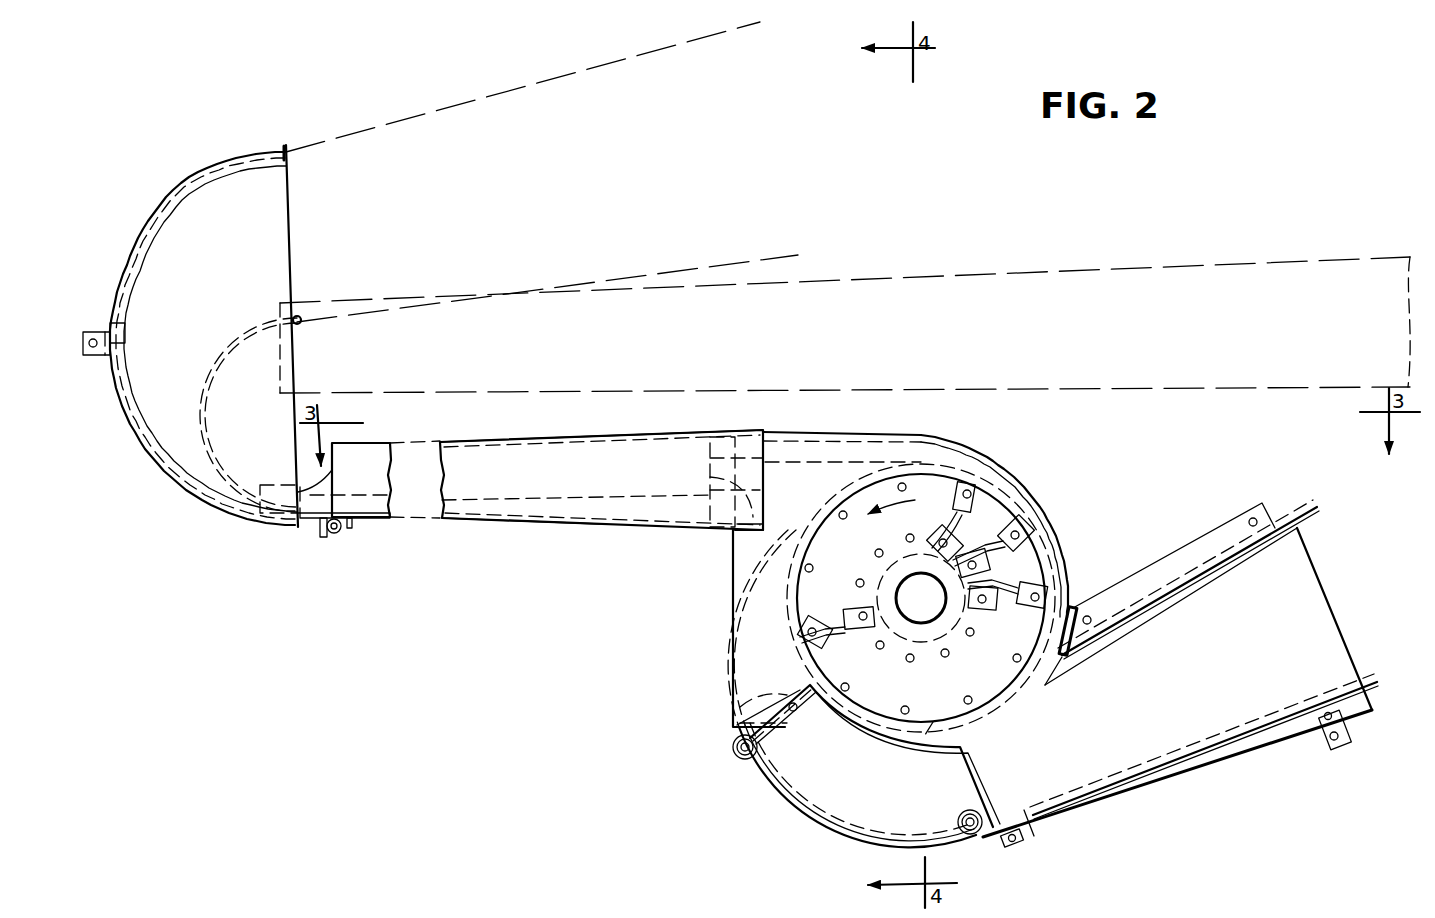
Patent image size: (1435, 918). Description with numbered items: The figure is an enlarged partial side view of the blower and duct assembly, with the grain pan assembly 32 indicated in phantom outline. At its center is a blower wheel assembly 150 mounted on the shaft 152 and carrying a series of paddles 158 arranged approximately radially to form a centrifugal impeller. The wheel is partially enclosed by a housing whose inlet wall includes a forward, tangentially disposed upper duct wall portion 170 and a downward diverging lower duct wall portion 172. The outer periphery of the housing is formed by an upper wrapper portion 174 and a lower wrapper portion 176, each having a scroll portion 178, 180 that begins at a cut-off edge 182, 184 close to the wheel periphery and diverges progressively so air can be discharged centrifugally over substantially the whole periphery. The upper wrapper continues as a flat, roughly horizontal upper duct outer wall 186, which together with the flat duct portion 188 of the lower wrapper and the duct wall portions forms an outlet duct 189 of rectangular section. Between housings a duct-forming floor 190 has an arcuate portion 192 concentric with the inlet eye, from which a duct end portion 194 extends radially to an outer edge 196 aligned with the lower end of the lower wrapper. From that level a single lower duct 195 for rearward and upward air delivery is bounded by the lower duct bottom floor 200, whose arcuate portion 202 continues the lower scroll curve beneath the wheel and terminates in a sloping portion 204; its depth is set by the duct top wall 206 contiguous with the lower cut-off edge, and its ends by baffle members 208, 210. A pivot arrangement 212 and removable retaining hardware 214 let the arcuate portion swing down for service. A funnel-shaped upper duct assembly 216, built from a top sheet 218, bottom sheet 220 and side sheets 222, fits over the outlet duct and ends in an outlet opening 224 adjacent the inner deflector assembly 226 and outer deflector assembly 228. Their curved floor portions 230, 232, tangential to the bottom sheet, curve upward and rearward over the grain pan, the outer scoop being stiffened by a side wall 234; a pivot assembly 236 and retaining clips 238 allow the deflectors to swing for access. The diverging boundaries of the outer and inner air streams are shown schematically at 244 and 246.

The grain pan assembly 32 is at (1212, 248).
The blower wheel assembly 150 is at (1027, 562).
The shaft 152 is at (895, 598).
The paddles 158 is at (953, 513).
The upper duct wall portion 170 is at (828, 481).
The lower duct wall portion 172 is at (773, 675).
The upper wrapper portion 174 is at (970, 431).
The lower wrapper portion 176 is at (722, 575).
The upper scroll portion 178 is at (1010, 477).
The lower scroll portion 180 is at (745, 598).
The upper cut-off edge 182 is at (812, 532).
The lower cut-off edge 184 is at (1062, 642).
The upper duct outer wall 186 is at (800, 432).
The flat duct portion 188 is at (722, 481).
The outlet duct 189 is at (710, 490).
The duct-forming floor 190 is at (869, 700).
The arcuate portion 192 is at (933, 722).
The duct end portion 194 is at (740, 700).
The lower duct 195 is at (1287, 770).
The outer edge 196 is at (740, 723).
The lower duct bottom floor 200 is at (838, 838).
The arcuate portion 202 is at (785, 787).
The sloping portion 204 is at (1212, 750).
The duct top wall 206 is at (1223, 560).
The baffle member 208 is at (875, 756).
The baffle member 210 is at (1177, 682).
The pivot arrangement 212 is at (740, 759).
The retaining hardware 214 is at (975, 833).
The upper duct assembly 216 is at (560, 421).
The top sheet 218 is at (450, 440).
The bottom sheet 220 is at (527, 523).
The side sheet 222 is at (536, 480).
The outlet opening 224 is at (298, 488).
The inner deflector assembly 226 is at (268, 335).
The outer deflector assembly 228 is at (176, 176).
The curved floor portion 230 is at (202, 410).
The curved floor portion 232 is at (128, 262).
The side wall 234 is at (290, 215).
The pivot assembly 236 is at (326, 535).
The retaining clip 238 is at (100, 330).
The outer air stream boundary 244 is at (487, 98).
The inner air stream boundary 246 is at (620, 280).